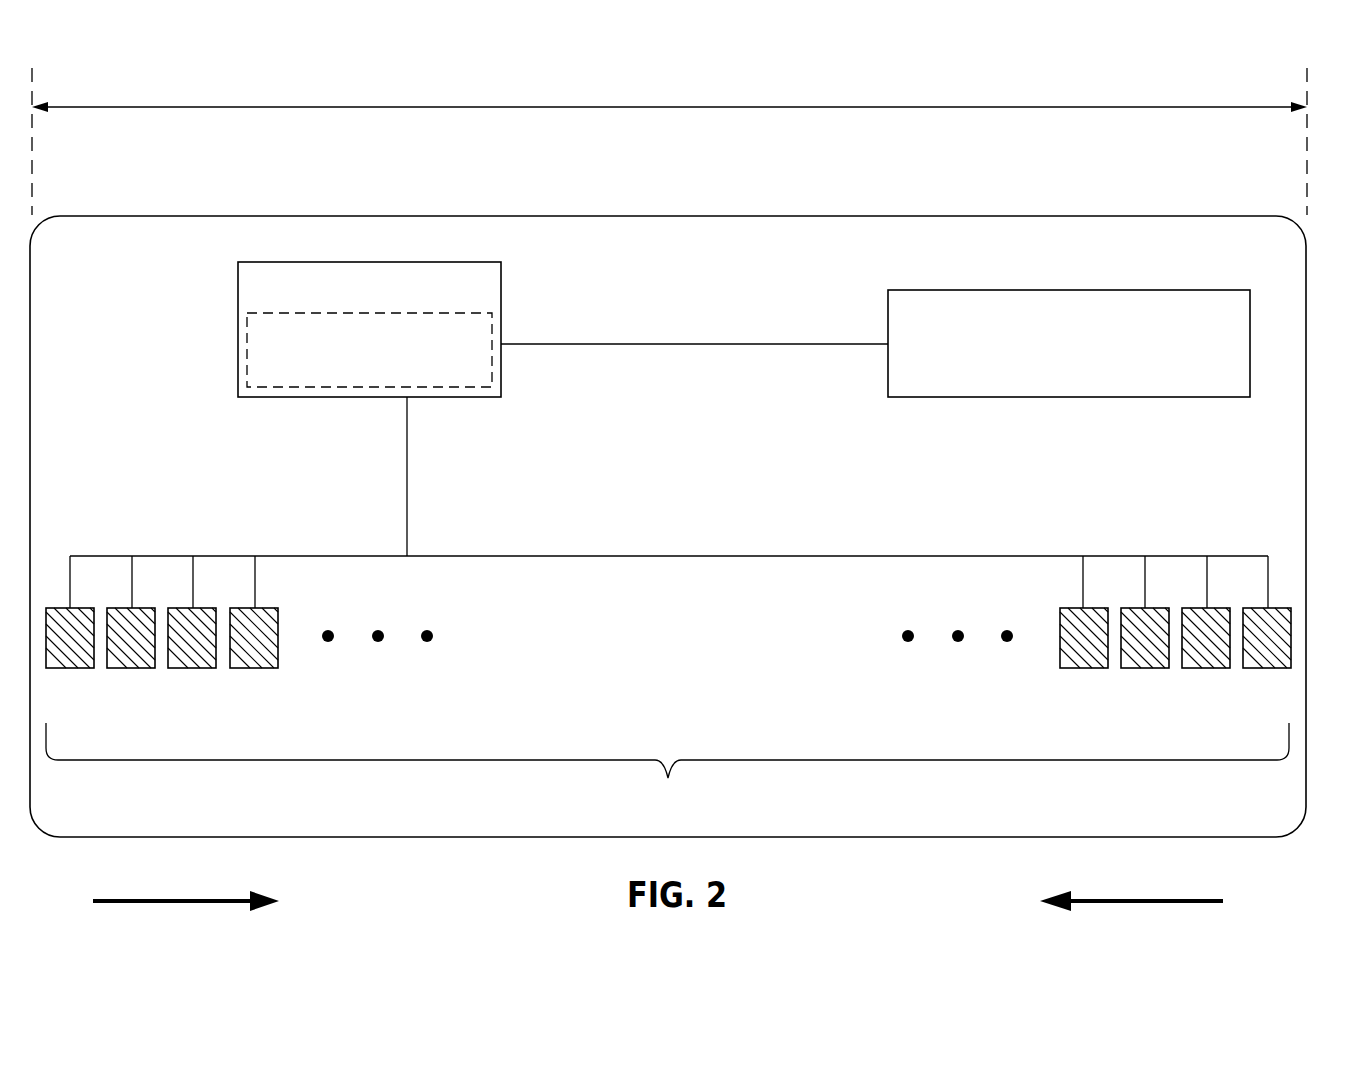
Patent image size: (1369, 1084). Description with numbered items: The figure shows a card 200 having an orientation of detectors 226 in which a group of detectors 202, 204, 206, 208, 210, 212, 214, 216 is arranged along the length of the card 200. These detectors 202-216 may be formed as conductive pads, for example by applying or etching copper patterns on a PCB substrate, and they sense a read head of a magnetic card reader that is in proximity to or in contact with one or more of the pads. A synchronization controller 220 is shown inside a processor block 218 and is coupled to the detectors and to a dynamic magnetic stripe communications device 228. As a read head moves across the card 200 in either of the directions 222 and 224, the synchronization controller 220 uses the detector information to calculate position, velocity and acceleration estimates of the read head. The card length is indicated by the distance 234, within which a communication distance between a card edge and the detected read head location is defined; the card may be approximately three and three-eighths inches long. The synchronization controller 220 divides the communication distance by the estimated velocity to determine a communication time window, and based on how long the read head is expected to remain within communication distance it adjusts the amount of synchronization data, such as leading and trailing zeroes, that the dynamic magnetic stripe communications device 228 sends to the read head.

The card 200 is at (1342, 534).
The detector 202 is at (49, 669).
The detector 204 is at (110, 669).
The detector 206 is at (171, 669).
The detector 208 is at (233, 669).
The detector 210 is at (1246, 669).
The detector 212 is at (1185, 669).
The detector 214 is at (1124, 669).
The detector 216 is at (1063, 669).
The processor 218 is at (534, 252).
The synchronization controller 220 is at (397, 313).
The direction 222 is at (148, 905).
The direction 224 is at (1172, 905).
The orientation of detectors 226 is at (667, 765).
The dynamic magnetic stripe communications device 228 is at (888, 310).
The distance 234 is at (613, 107).